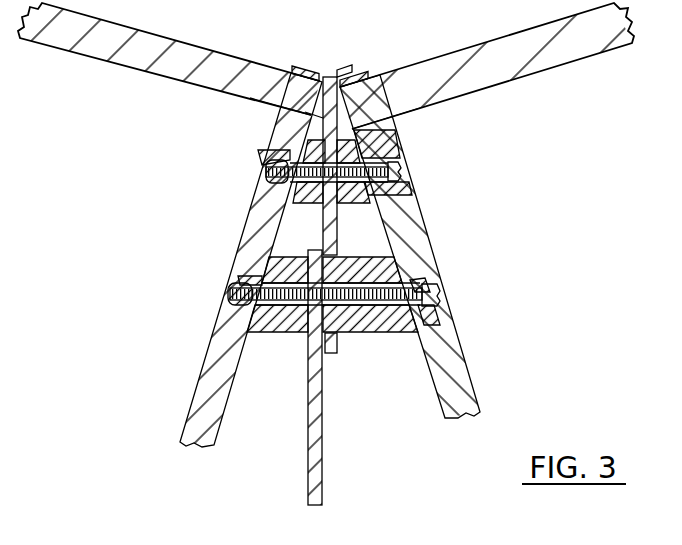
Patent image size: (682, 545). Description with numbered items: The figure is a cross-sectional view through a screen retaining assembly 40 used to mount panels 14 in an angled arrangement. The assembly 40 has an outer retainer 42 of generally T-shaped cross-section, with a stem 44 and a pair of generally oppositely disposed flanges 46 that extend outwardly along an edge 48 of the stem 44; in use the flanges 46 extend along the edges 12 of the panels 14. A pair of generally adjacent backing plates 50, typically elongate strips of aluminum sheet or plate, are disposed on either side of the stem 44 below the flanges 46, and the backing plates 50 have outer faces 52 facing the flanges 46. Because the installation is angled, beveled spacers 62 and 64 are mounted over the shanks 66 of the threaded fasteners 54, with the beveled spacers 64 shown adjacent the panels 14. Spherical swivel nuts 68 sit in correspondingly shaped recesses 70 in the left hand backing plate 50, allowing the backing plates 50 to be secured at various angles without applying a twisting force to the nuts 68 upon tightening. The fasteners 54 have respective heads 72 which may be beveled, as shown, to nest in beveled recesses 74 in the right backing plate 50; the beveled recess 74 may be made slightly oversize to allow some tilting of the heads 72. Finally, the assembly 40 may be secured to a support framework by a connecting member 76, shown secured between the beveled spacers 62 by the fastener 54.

The edge 12 is at (388, 100).
The panel 14 is at (62, 45).
The screen retaining assembly 40 is at (120, 254).
The outer retainer 42 is at (322, 66).
The stem 44 is at (372, 72).
The flanges 46 is at (306, 75).
The edge of the stem 48 is at (305, 112).
The backing plates 50 is at (453, 372).
The outer faces 52 is at (396, 128).
The threaded fasteners 54 is at (412, 165).
The beveled spacers 62 is at (287, 330).
The beveled spacers 64 is at (311, 200).
The shanks 66 is at (413, 210).
The spherical swivel nuts 68 is at (262, 186).
The recesses 70 is at (262, 158).
The heads 72 is at (410, 180).
The beveled recesses 74 is at (400, 146).
The connecting member 76 is at (315, 467).